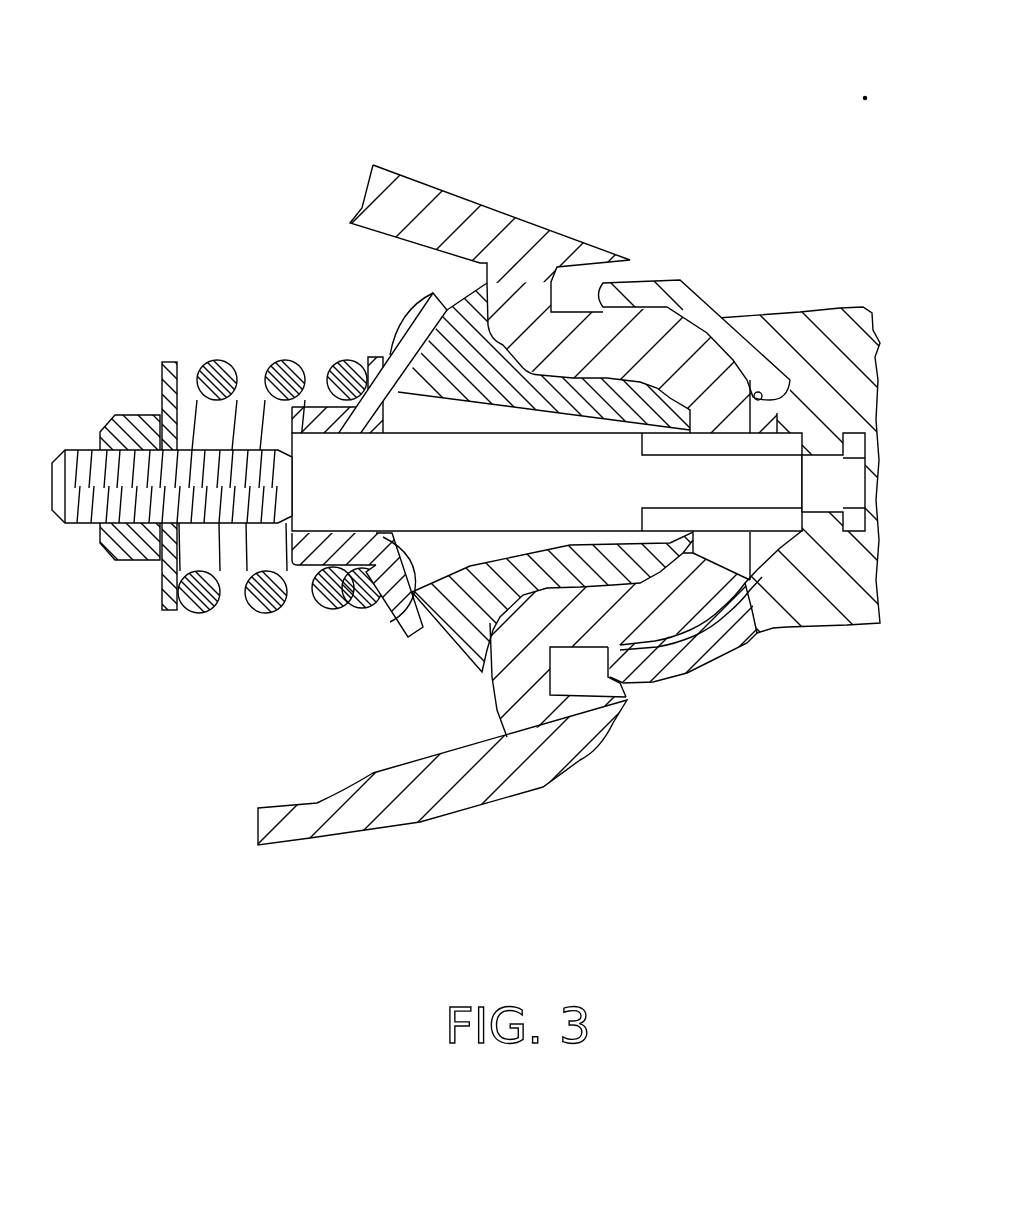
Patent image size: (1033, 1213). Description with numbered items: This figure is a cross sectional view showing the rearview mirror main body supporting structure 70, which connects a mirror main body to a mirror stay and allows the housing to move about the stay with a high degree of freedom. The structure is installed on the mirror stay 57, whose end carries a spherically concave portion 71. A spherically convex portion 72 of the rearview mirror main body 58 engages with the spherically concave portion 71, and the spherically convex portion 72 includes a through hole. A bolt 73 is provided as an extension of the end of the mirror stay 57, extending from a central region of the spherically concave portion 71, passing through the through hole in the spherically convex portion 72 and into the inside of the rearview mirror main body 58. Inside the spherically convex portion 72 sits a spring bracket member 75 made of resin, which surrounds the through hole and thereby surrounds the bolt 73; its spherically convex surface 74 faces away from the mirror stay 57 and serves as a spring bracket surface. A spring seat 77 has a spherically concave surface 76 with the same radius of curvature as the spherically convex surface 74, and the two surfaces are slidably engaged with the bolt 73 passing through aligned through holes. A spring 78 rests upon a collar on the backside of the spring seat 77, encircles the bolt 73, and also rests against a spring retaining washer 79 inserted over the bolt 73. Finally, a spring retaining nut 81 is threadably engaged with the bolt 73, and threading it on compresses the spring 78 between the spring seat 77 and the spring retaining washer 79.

The rearview mirror main body supporting structure 70 is at (516, 443).
The mirror stay 57 is at (840, 310).
The rearview mirror main body 58 is at (443, 183).
The spherically concave portion 71 is at (763, 397).
The spherically convex portion 72 is at (663, 312).
The bolt 73 is at (87, 450).
The spherically convex surface 74 is at (452, 655).
The spring bracket member 75 is at (477, 623).
The spherically concave surface 76 is at (393, 623).
The spring seat 77 is at (305, 548).
The spring 78 is at (197, 613).
The spring retaining washer 79 is at (172, 575).
The spring retaining nut 81 is at (137, 413).